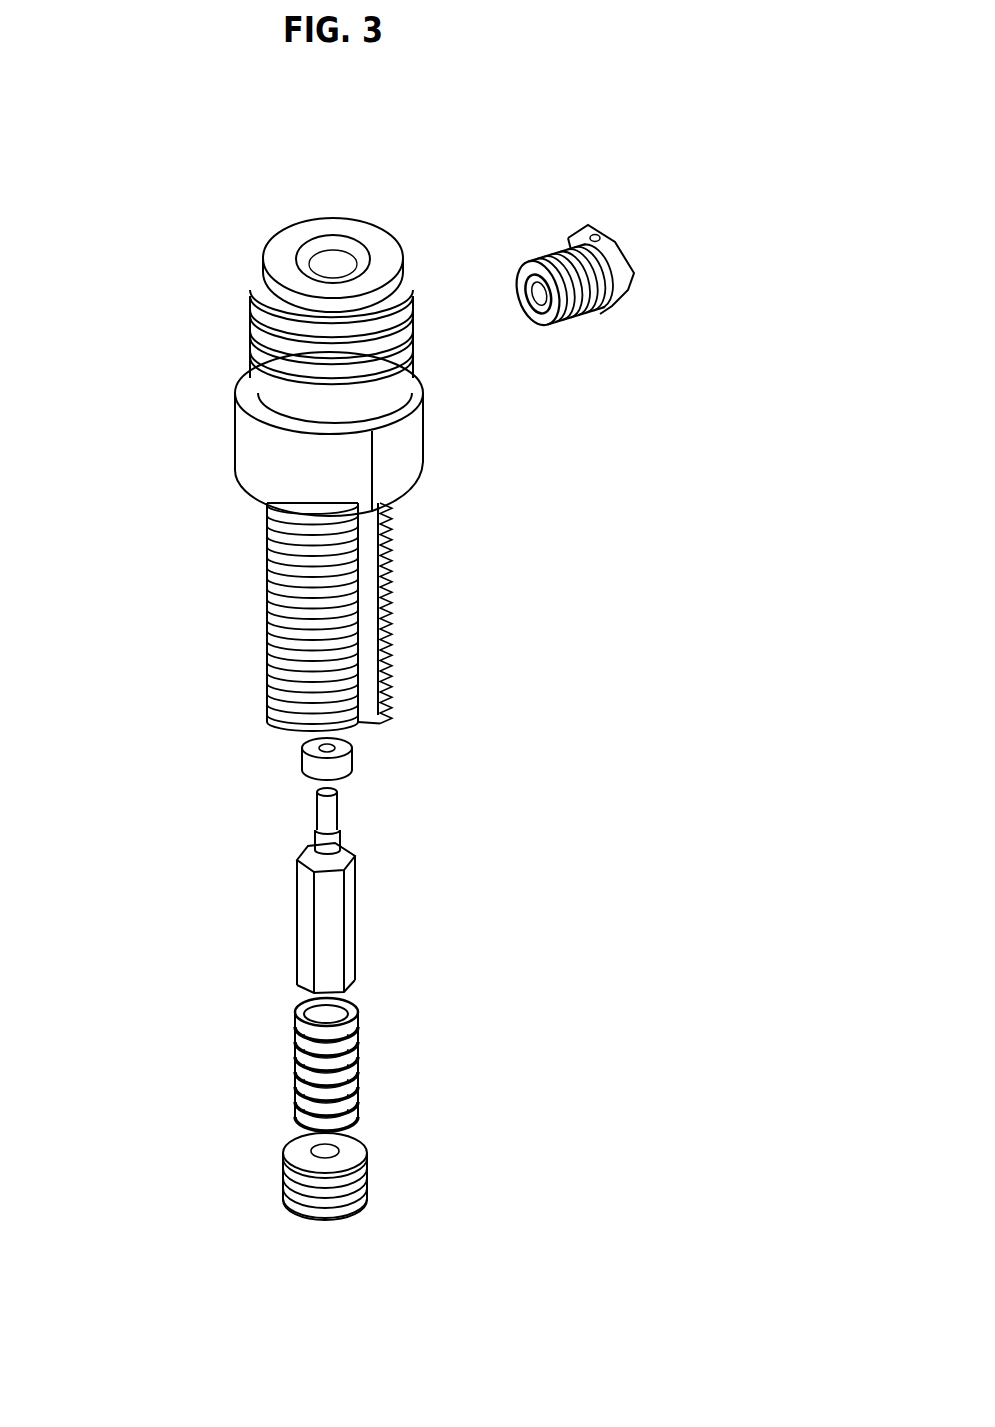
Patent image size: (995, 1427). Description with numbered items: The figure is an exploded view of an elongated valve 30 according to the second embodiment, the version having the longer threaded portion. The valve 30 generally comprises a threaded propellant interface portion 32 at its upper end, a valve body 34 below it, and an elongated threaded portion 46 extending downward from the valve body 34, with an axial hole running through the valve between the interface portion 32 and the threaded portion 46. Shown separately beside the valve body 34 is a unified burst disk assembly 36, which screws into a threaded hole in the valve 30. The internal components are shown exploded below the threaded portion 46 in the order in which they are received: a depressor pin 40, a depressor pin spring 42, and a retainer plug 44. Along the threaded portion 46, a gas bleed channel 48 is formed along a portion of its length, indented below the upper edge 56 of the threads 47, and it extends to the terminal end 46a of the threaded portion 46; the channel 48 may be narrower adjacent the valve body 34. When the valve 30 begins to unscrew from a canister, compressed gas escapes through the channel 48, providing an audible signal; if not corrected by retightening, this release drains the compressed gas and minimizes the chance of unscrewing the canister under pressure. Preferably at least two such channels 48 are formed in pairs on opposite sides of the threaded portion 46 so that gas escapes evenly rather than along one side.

The valve 30 is at (323, 126).
The threaded propellant interface portion 32 is at (245, 300).
The valve body 34 is at (395, 455).
The unified burst disk assembly 36 is at (637, 280).
The depressor pin 40 is at (295, 920).
The depressor pin spring 42 is at (287, 1070).
The retainer plug 44 is at (285, 1197).
The threaded portion 46 is at (267, 538).
The terminal end 46a is at (287, 723).
The threads 47 is at (265, 650).
The gas bleed channel 48 is at (383, 723).
The upper edge 56 is at (392, 558).